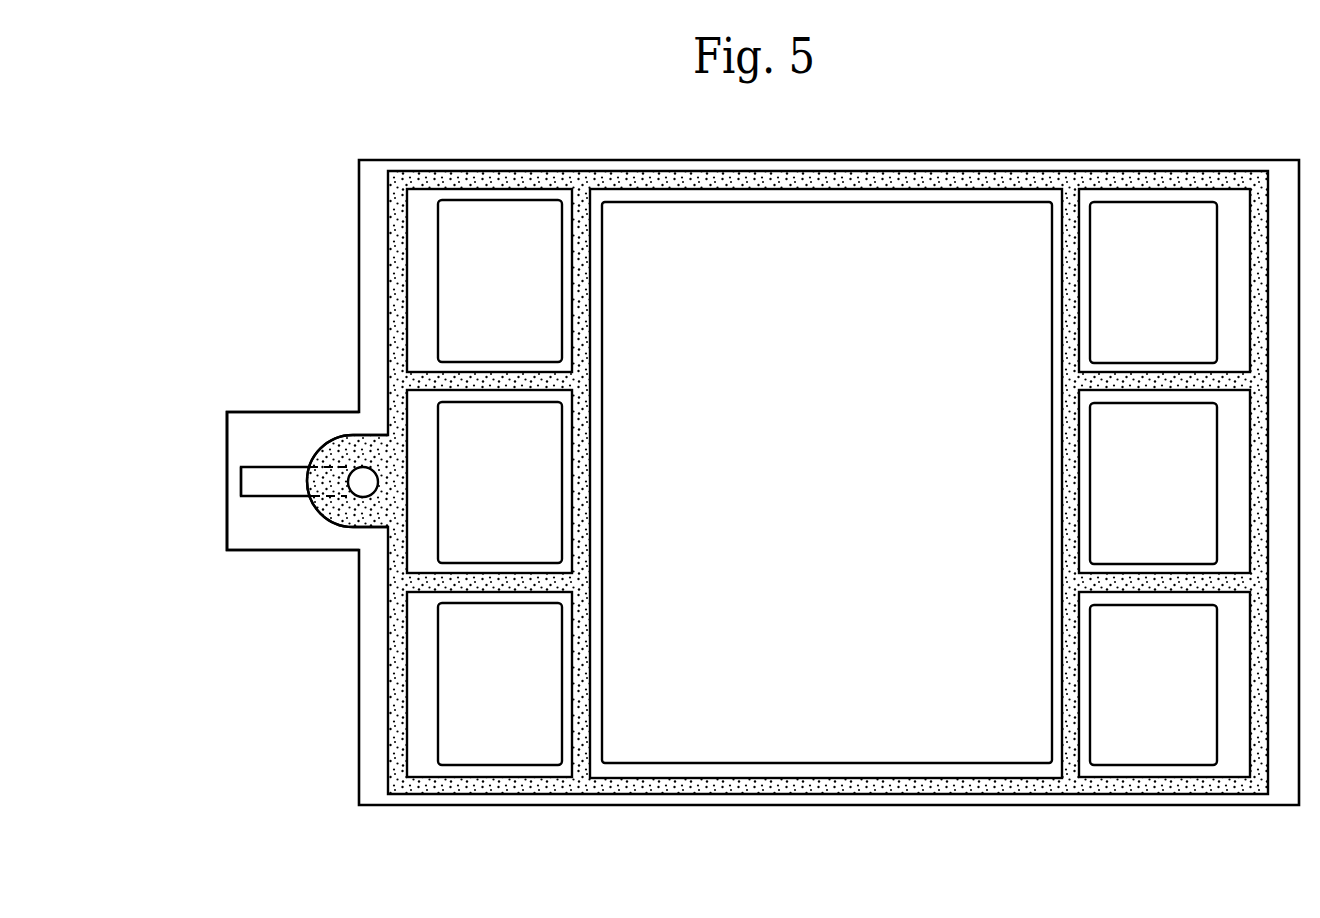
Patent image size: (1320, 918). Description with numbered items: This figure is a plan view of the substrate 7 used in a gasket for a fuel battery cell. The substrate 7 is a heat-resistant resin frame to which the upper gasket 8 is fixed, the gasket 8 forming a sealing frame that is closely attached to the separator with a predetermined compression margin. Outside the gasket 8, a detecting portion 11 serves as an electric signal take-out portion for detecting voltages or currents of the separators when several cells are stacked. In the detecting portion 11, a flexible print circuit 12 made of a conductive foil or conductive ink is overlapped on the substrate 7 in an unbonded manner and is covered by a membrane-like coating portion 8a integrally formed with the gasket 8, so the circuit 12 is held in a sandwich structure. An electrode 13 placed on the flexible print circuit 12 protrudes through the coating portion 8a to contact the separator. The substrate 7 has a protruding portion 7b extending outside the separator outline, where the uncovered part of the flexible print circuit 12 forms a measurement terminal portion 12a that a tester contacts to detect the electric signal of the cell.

The substrate 7 is at (372, 787).
The protruding portion 7b is at (267, 532).
The upper gasket 8 is at (580, 783).
The coating portion 8a is at (335, 505).
The detecting portion 11 is at (225, 463).
The flexible print circuit 12 is at (333, 470).
The measurement terminal portion 12a is at (253, 480).
The electrode 13 is at (363, 470).